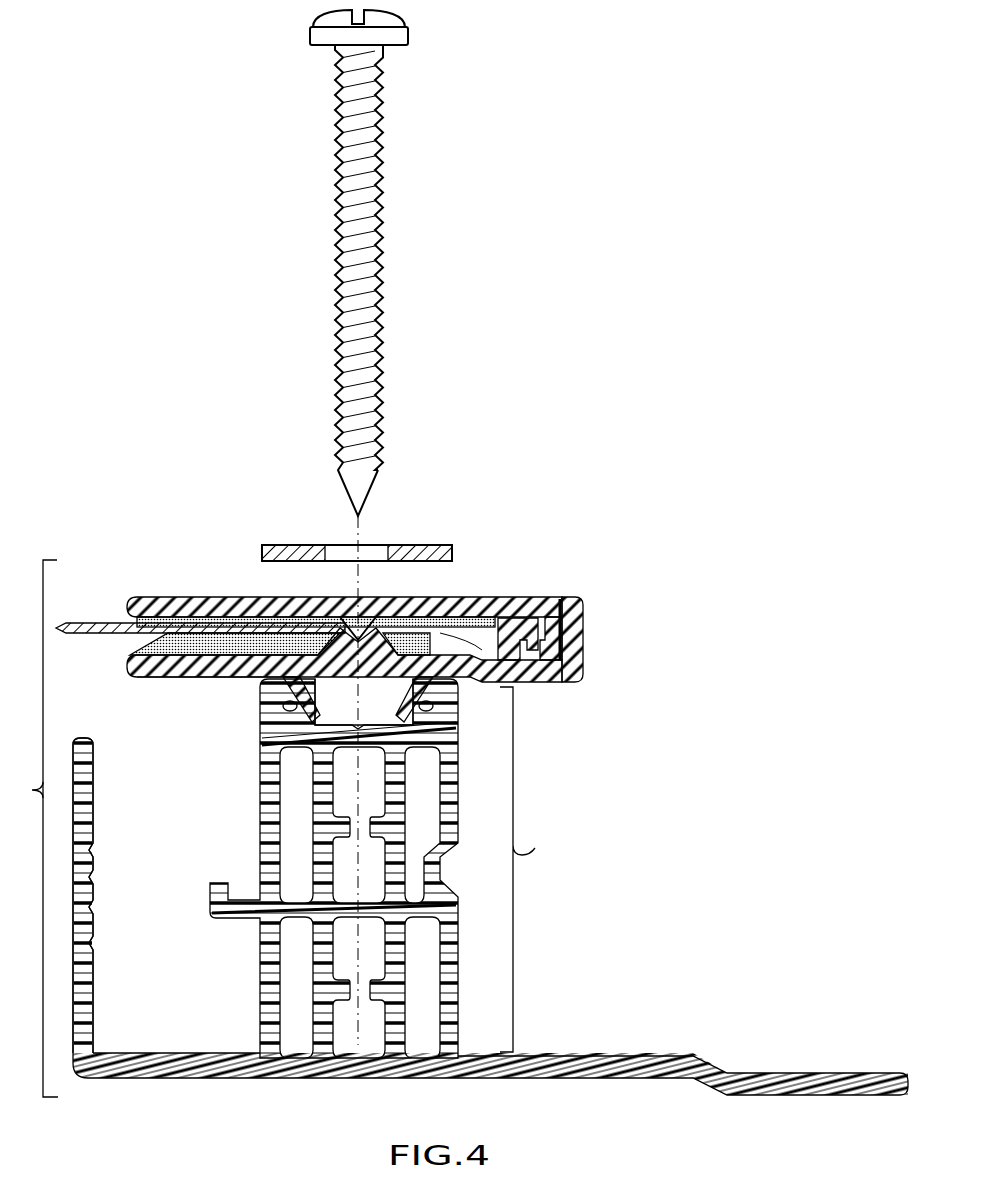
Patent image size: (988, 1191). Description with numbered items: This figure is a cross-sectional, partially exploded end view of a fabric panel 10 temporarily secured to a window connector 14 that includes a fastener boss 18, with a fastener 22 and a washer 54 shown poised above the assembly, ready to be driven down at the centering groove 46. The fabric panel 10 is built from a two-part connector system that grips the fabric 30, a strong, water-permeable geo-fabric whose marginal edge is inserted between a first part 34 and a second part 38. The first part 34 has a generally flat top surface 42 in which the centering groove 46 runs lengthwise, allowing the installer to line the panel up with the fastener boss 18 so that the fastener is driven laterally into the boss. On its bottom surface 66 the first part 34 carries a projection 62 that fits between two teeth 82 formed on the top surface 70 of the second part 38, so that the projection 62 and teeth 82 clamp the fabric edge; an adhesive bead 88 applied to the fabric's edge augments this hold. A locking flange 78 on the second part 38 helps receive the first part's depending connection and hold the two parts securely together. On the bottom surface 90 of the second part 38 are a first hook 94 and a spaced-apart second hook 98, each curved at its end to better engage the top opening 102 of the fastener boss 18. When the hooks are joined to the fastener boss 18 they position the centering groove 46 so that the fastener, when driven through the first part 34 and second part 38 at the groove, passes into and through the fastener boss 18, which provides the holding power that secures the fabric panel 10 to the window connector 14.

The fabric panel 10 is at (459, 828).
The window connector 14 is at (93, 808).
The fastener boss 18 is at (380, 868).
The screw 22 is at (355, 305).
The fabric 30 is at (88, 623).
The first part 34 is at (135, 597).
The second part 38 is at (140, 677).
The top surface 42 is at (166, 596).
The centering groove 46 is at (358, 597).
The washer 54 is at (420, 545).
The projection 62 is at (380, 597).
The bottom surface 66 is at (140, 618).
The top surface 70 is at (150, 645).
The locking flange 78 is at (520, 682).
The teeth 82 is at (332, 682).
The adhesive bead 88 is at (262, 637).
The bottom surface 90 is at (166, 679).
The first hook 94 is at (288, 706).
The second hook 98 is at (435, 710).
The top opening 102 is at (330, 718).